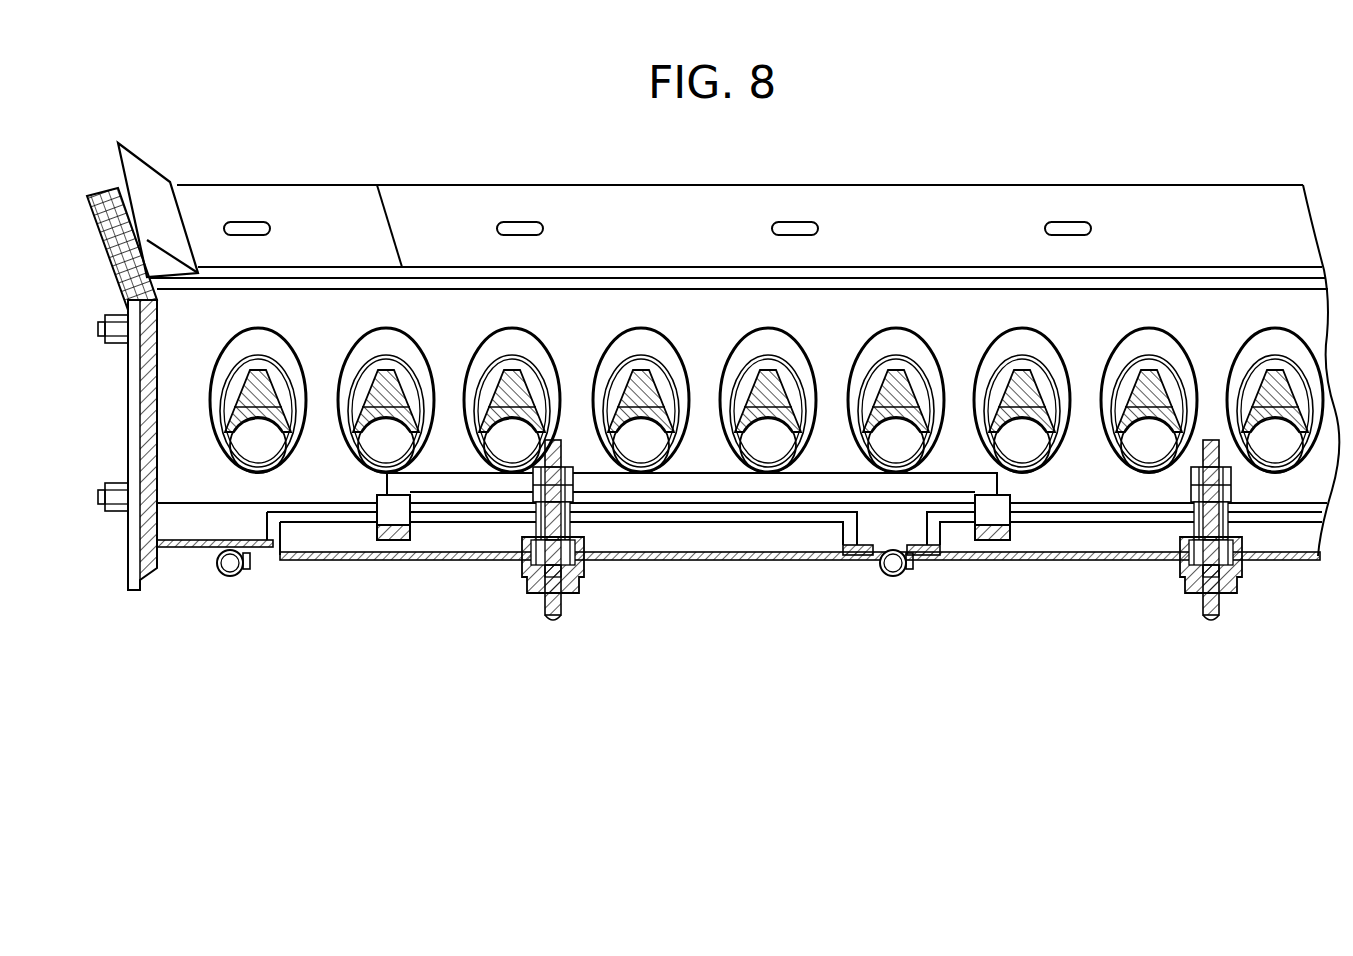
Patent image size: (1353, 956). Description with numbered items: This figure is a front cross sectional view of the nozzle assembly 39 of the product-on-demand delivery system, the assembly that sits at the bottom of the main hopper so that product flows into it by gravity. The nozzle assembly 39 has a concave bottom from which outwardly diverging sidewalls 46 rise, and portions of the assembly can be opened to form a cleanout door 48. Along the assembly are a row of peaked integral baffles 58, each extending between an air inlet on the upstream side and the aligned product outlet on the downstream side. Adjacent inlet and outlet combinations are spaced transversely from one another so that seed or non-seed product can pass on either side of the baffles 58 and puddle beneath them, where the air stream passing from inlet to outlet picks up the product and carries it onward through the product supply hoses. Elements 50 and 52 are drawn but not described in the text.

The nozzle assembly 39 is at (155, 410).
The outwardly diverging sidewalls 46 is at (459, 328).
The cleanout door 48 is at (421, 562).
The roller 50 is at (236, 576).
The bolt assembly 52 is at (522, 620).
The baffle 58 is at (382, 372).